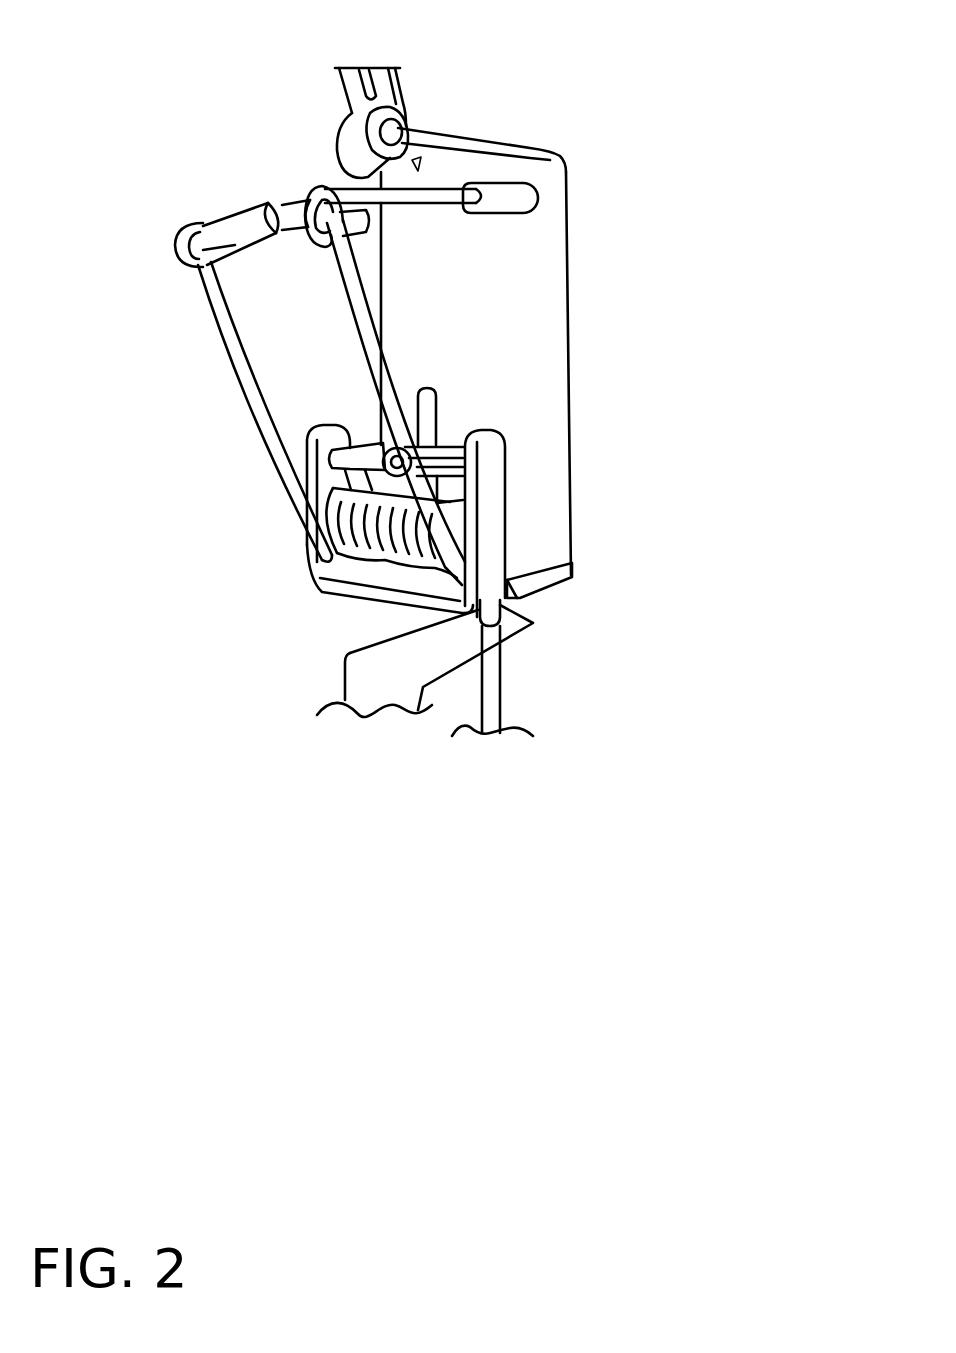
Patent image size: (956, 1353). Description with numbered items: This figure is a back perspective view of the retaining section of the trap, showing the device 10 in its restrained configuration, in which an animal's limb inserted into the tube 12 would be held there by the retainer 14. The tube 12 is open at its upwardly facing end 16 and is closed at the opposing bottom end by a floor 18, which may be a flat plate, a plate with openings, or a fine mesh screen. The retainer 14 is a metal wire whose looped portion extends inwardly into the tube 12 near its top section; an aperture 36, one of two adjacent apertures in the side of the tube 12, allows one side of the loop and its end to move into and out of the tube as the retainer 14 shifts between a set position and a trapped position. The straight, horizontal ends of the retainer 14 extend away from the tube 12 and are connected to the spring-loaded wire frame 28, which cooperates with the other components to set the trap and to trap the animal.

The device 10 is at (660, 46).
The tube 12 is at (597, 433).
The retainer 14 is at (328, 198).
The upwardly facing end 16 is at (510, 137).
The floor 18 is at (557, 594).
The spring-loaded wire frame 28 is at (241, 390).
The aperture 36 is at (504, 199).